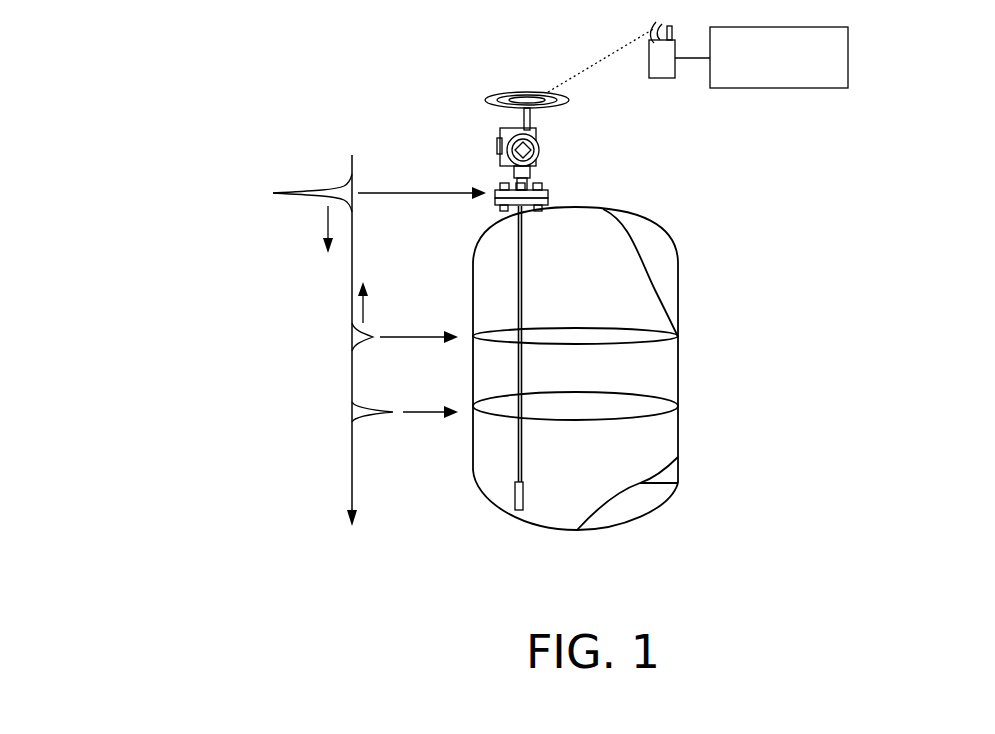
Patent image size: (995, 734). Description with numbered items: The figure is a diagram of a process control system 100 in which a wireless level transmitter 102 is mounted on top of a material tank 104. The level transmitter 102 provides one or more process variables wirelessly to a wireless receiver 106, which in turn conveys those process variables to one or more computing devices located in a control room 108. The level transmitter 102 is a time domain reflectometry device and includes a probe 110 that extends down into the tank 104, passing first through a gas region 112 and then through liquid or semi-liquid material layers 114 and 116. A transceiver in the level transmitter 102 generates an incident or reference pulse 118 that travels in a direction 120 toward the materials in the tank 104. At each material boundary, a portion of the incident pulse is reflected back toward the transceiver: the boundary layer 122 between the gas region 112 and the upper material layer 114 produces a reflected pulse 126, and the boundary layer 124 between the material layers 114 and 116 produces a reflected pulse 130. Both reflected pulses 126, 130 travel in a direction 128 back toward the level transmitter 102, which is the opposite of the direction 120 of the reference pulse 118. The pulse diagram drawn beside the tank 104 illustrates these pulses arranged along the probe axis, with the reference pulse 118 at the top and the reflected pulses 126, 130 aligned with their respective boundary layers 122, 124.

The process control system 100 is at (411, 72).
The wireless level transmitter 102 is at (541, 148).
The material tank 104 is at (661, 244).
The wireless receiver 106 is at (659, 78).
The control room 108 is at (838, 84).
The probe 110 is at (519, 276).
The gas region 112 is at (492, 241).
The material layer 114 is at (477, 368).
The material layer 116 is at (477, 454).
The reference pulse 118 is at (323, 186).
The direction 120 is at (322, 226).
The boundary layer 122 is at (565, 334).
The boundary layer 124 is at (664, 404).
The reflected pulse 126 is at (350, 342).
The direction 128 is at (350, 314).
The reflected pulse 130 is at (350, 418).